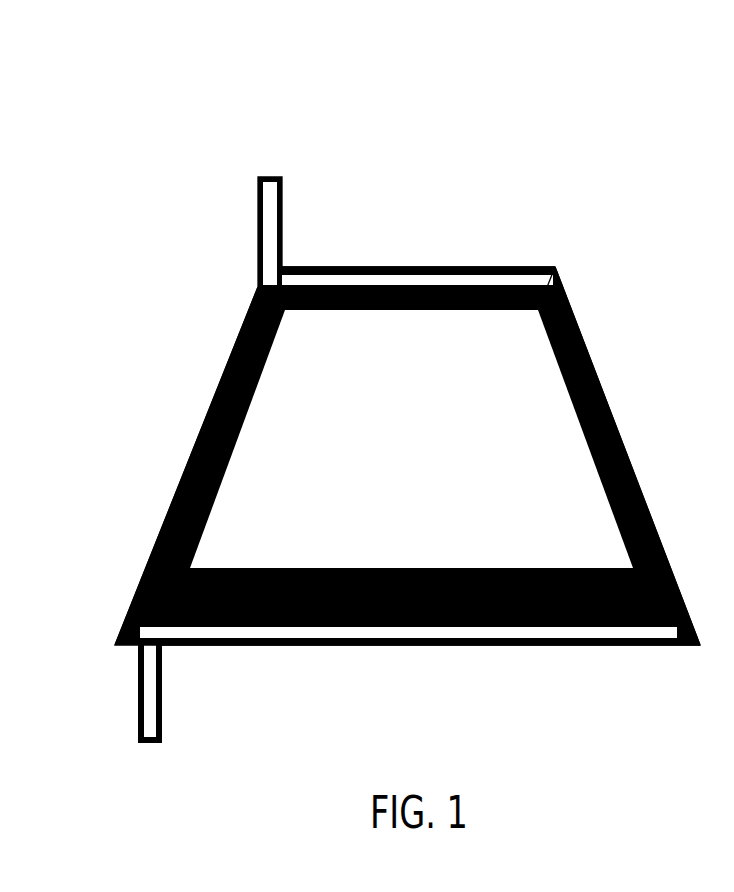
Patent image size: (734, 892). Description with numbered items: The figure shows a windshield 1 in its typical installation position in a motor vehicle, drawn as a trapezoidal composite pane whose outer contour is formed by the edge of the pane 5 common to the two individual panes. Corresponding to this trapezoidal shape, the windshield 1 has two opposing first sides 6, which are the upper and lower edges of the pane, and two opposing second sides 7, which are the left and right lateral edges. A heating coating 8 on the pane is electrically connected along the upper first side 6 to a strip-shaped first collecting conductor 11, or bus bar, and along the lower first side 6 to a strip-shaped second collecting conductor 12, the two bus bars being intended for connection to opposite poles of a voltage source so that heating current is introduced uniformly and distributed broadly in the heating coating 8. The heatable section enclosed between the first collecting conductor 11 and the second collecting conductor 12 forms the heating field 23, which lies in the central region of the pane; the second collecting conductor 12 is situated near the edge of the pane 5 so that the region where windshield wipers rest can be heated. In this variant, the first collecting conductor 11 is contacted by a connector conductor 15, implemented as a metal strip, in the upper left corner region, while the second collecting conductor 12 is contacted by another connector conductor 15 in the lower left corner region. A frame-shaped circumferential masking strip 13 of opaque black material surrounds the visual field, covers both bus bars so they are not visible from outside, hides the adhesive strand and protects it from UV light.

The windshield 1 is at (163, 128).
The edge of the pane 5 is at (594, 342).
The second sides 7 is at (203, 387).
The first sides 6 is at (450, 260).
The heating coating 8 is at (520, 342).
The first collecting conductor 11 is at (363, 266).
The second collecting conductor 12 is at (478, 647).
The masking strip 13 is at (648, 503).
The connector conductor 15 is at (258, 232).
The heating field 23 is at (430, 430).